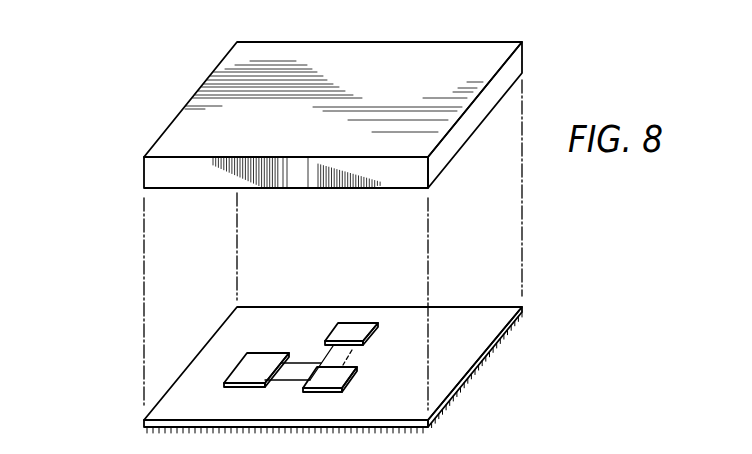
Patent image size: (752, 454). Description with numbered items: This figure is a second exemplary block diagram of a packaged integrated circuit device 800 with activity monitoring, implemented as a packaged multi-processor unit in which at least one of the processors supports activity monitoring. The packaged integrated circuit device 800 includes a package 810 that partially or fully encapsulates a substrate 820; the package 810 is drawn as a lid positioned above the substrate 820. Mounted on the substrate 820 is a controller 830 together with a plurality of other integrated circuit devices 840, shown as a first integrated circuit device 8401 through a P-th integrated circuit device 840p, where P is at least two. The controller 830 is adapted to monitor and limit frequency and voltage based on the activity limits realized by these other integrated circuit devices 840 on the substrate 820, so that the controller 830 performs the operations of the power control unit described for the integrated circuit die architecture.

The packaged integrated circuit device 800 is at (132, 47).
The package 810 is at (180, 138).
The substrate 820 is at (190, 400).
The controller 830 is at (248, 372).
The integrated circuit devices 840 is at (358, 324).
The first integrated circuit device 8401 is at (357, 337).
The P-th integrated circuit device 840p is at (355, 372).